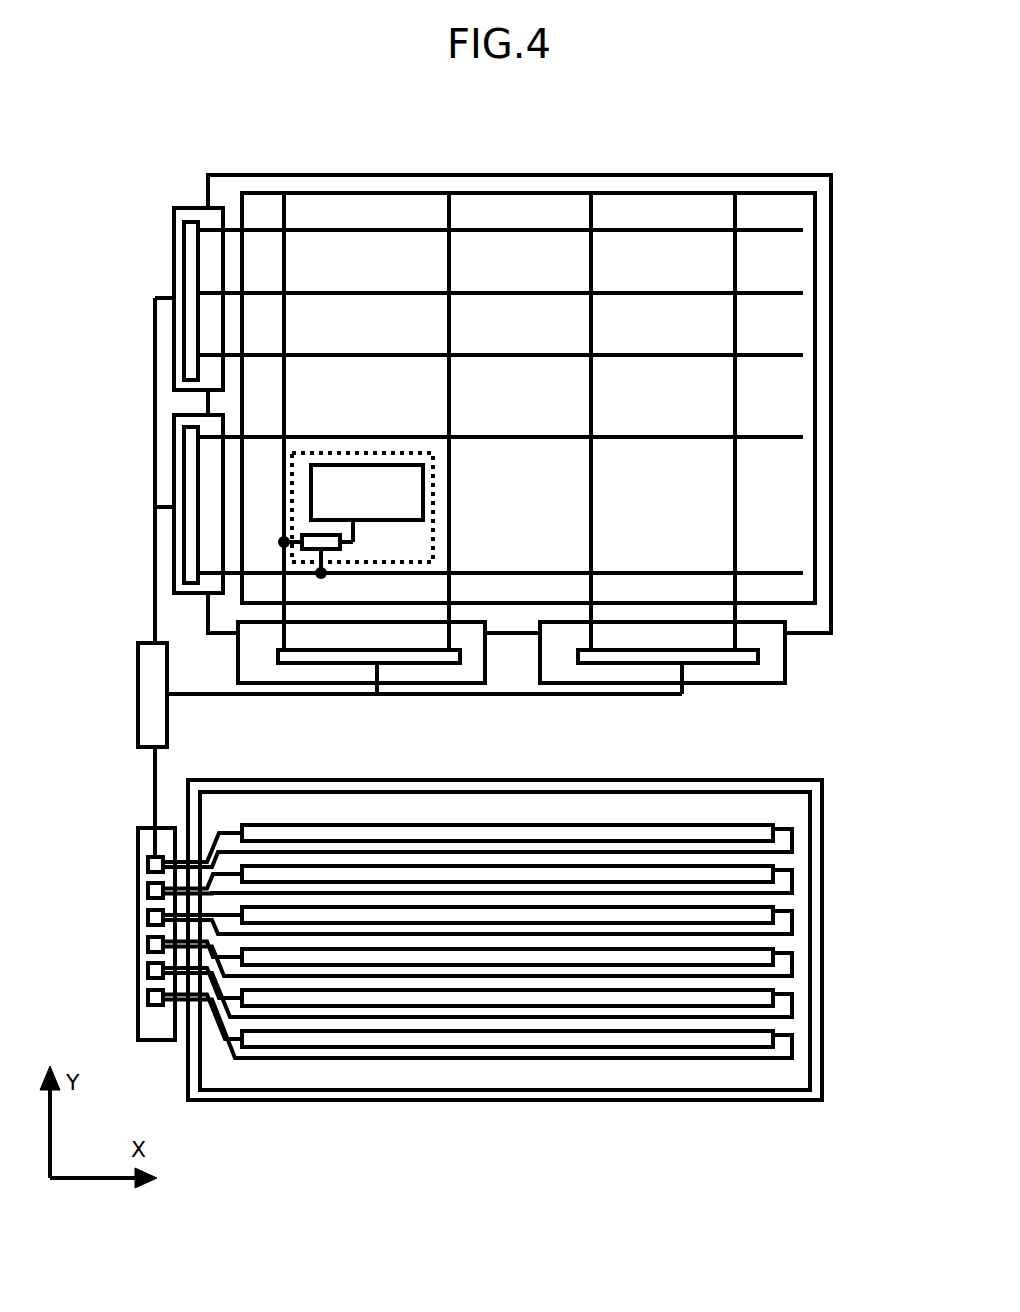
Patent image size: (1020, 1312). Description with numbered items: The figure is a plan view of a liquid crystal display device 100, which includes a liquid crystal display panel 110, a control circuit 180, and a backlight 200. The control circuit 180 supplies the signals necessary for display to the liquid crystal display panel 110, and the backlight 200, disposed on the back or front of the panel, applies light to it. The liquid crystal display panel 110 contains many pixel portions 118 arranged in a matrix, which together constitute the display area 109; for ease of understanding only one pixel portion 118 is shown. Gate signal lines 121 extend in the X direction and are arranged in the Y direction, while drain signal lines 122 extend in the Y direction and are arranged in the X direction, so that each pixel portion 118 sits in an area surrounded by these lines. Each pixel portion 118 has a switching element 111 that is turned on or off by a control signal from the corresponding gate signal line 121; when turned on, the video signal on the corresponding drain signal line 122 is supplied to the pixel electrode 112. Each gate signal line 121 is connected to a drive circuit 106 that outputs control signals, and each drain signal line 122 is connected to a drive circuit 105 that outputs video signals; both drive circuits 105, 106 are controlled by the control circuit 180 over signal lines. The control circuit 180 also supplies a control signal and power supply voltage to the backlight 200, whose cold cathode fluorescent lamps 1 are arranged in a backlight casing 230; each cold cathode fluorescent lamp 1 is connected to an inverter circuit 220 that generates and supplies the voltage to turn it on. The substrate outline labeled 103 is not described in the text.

The cold cathode fluorescent lamp 1 is at (610, 1060).
The liquid crystal display device 100 is at (437, 1172).
The substrate 103 is at (333, 173).
The drive circuit 105 is at (742, 658).
The drive circuit 106 is at (177, 217).
The display area 109 is at (655, 202).
The liquid crystal display panel 110 is at (502, 180).
The switching element 111 is at (340, 543).
The pixel electrode 112 is at (377, 497).
The pixel portion 118 is at (437, 478).
The gate signal line 121 is at (505, 433).
The drain signal line 122 is at (288, 383).
The control circuit 180 is at (160, 735).
The backlight 200 is at (285, 1127).
The inverter circuit 220 is at (150, 1010).
The backlight casing 230 is at (737, 1102).